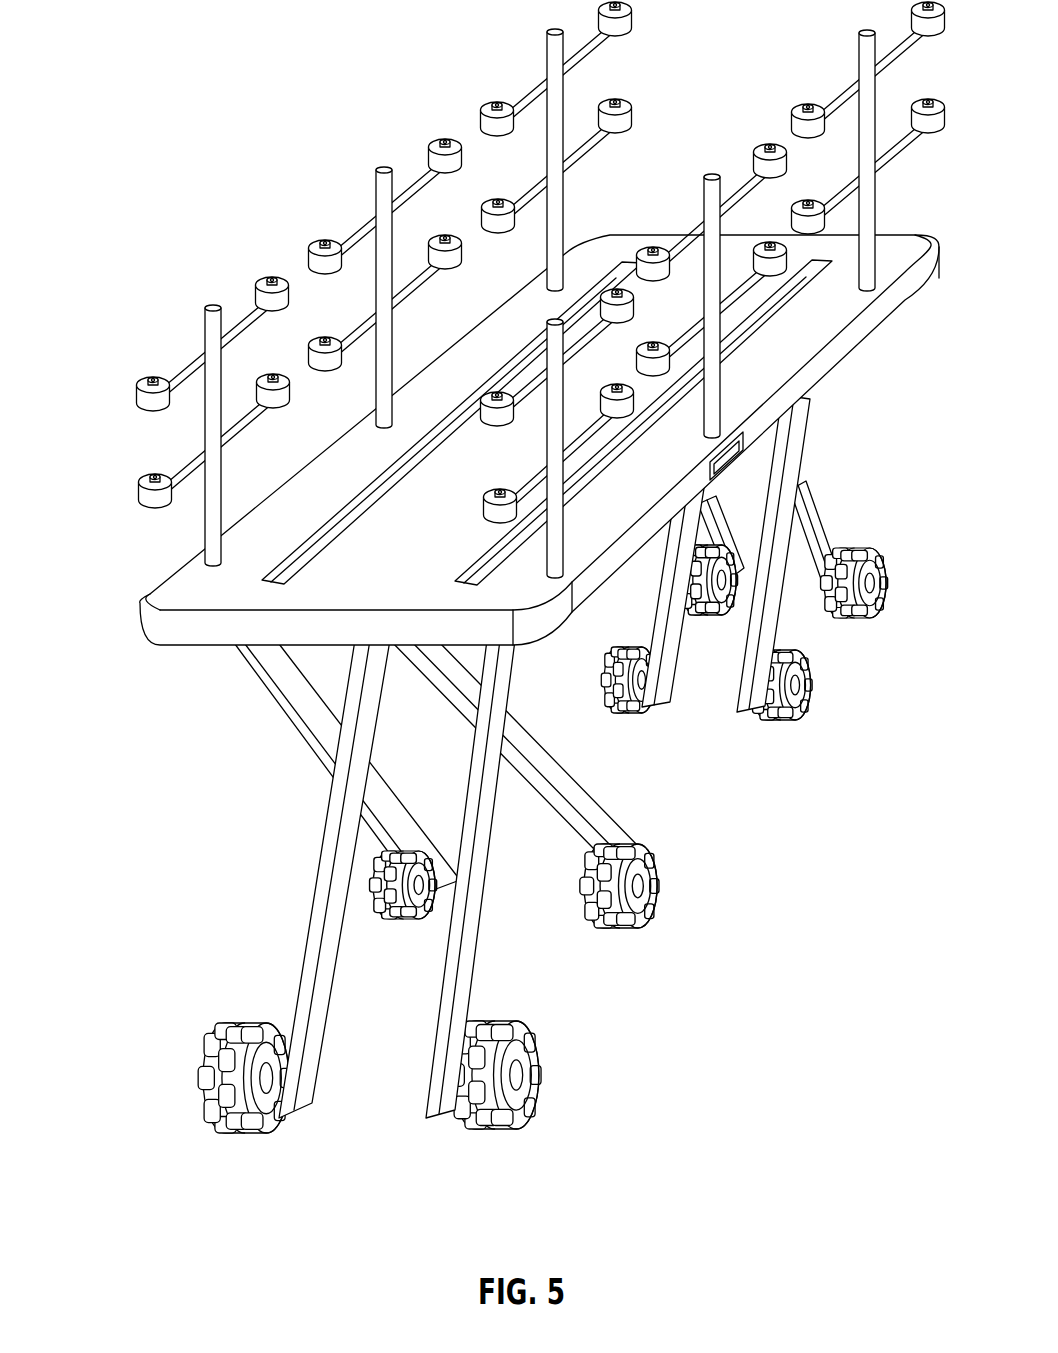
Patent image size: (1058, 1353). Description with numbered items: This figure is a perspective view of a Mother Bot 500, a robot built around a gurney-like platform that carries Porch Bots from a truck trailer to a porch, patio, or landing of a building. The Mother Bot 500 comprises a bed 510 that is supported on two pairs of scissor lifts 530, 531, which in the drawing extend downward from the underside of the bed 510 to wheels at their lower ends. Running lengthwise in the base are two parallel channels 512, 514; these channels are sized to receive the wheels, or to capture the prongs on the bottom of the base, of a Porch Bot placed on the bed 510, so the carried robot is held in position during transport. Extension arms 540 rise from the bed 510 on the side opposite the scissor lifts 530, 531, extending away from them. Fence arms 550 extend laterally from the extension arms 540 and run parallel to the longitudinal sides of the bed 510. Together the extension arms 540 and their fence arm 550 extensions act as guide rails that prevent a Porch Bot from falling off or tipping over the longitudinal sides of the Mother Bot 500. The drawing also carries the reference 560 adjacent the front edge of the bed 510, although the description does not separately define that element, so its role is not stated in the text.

The Mother Bot 500 is at (150, 58).
The bed 510 is at (142, 632).
The parallel channel 512 is at (270, 583).
The parallel channel 514 is at (458, 586).
The scissor lift 530 is at (490, 966).
The scissor lift 531 is at (804, 514).
The extension arm 540 is at (205, 530).
The fence arm 550 is at (192, 364).
The platform top edge 560 is at (207, 613).